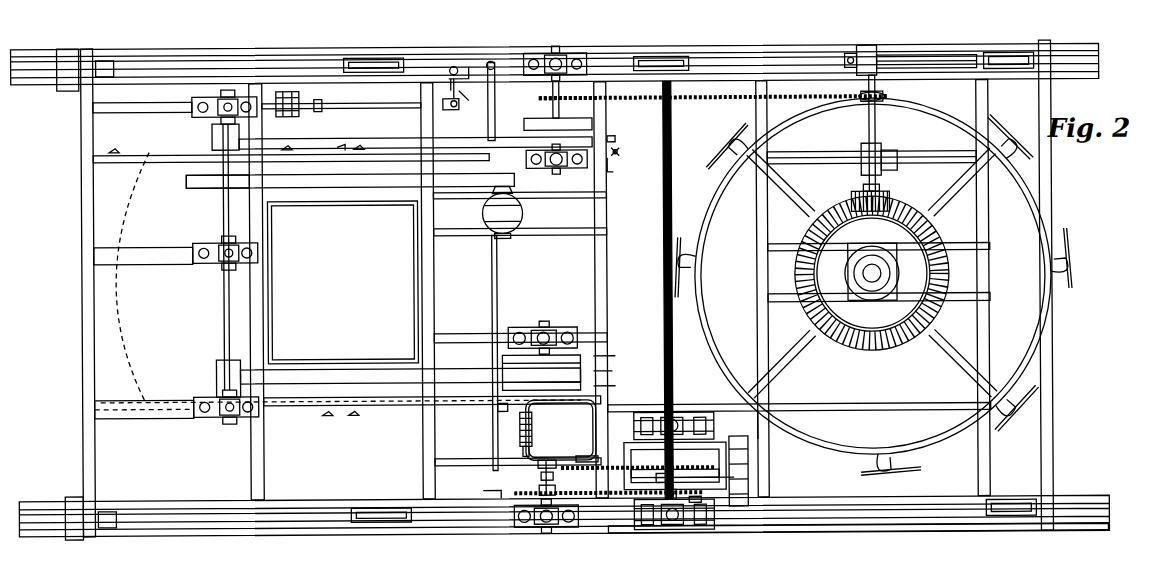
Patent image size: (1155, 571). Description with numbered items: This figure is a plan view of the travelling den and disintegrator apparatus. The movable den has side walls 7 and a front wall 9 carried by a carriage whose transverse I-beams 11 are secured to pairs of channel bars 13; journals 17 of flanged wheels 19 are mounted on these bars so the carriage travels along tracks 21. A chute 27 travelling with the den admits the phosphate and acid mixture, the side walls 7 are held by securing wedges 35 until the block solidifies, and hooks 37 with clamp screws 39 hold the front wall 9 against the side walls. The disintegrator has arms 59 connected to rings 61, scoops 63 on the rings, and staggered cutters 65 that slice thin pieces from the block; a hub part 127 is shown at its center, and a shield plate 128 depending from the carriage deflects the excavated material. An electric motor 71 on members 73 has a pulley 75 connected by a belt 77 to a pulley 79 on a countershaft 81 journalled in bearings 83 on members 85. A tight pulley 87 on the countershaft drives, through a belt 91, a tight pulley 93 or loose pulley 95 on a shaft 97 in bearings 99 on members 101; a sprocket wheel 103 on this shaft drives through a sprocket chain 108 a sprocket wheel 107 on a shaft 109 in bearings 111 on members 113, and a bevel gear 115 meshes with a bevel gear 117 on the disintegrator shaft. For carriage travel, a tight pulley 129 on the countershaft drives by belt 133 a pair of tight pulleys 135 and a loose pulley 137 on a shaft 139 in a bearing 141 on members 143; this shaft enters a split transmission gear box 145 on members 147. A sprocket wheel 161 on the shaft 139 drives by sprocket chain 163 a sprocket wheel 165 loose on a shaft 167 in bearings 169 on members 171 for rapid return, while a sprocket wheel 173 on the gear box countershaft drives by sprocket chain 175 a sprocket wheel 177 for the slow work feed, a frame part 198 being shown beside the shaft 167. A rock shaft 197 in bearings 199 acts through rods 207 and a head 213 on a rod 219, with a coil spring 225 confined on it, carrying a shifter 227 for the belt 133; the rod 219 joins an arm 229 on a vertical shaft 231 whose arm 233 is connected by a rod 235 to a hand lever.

The side walls 7 is at (146, 153).
The front wall 9 is at (607, 255).
The transverse I-beams 11 is at (94, 446).
The channel bars 13 is at (118, 297).
The journals 17 is at (664, 200).
The flanged wheels 19 is at (108, 60).
The tracks 21 is at (180, 60).
The chute 27 is at (342, 282).
The securing wedges 35 is at (346, 418).
The hooks 37 is at (614, 164).
The clamp screws 39 is at (620, 152).
The arms 59 is at (785, 215).
The rings 61 is at (703, 230).
The scoops 63 is at (1030, 152).
The cutters 65 is at (700, 128).
The electric motor 71 is at (483, 216).
The members 73 is at (553, 198).
The pulley 75 is at (490, 195).
The belt 77 is at (348, 186).
The pulley 79 is at (200, 175).
The countershaft 81 is at (224, 207).
The bearings 83 is at (193, 108).
The members 85 is at (118, 110).
The tight pulley 87 is at (213, 143).
The belt 91 is at (332, 148).
The tight pulley 93 is at (616, 139).
The loose pulley 95 is at (595, 124).
The shaft 97 is at (554, 107).
The bearings 99 is at (570, 53).
The members 101 is at (497, 62).
The sprocket wheel 103 is at (557, 93).
The sprocket wheel 107 is at (886, 98).
The chain 108 is at (685, 98).
The shaft 109 is at (876, 125).
The bearings 111 is at (878, 55).
The members 113 is at (925, 57).
The bevel gear 115 is at (892, 205).
The bevel gear 117 is at (952, 232).
The hub 127 is at (900, 272).
The shield plate 128 is at (795, 534).
The tight pulley 129 is at (216, 365).
The belt 133 is at (328, 382).
The tight pulleys 135 is at (618, 370).
The loose pulley 137 is at (618, 371).
The shaft 139 is at (548, 322).
The bearing 141 is at (522, 327).
The members 143 is at (448, 333).
The split transmission gear box 145 is at (561, 430).
The members 147 is at (448, 458).
The sprocket wheel 161 is at (513, 510).
The sprocket chain 163 is at (590, 496).
The sprocket wheel 165 is at (700, 503).
The shaft 167 is at (672, 530).
The bearings 169 is at (678, 418).
The members 171 is at (757, 412).
The sprocket wheel 173 is at (634, 453).
The sprocket chain 175 is at (590, 456).
The sprocket wheel 177 is at (675, 464).
The rock shaft 197 is at (537, 471).
The frame 198 is at (747, 470).
The bearings 199 is at (482, 492).
The rods 207 is at (519, 432).
The head 213 is at (507, 411).
The rod 219 is at (492, 271).
The coil spring 225 is at (524, 440).
The shifter 227 is at (500, 360).
The arm 229 is at (470, 66).
The vertical shaft 231 is at (453, 66).
The arm 233 is at (463, 100).
The rod 235 is at (372, 108).